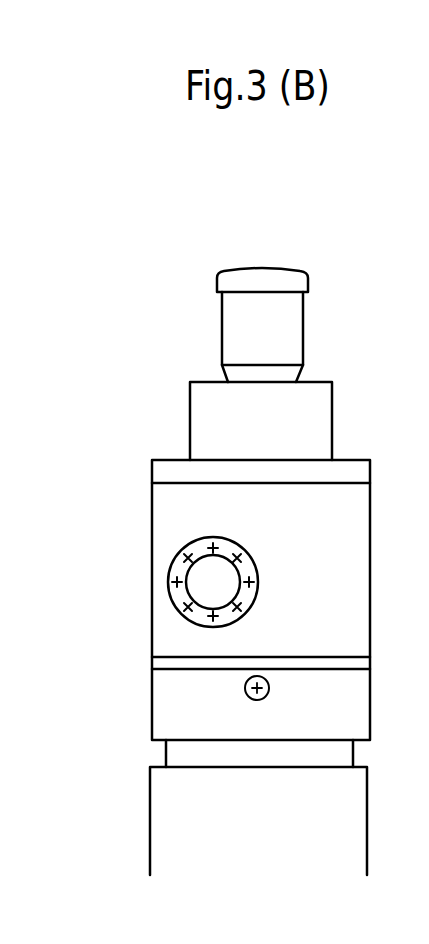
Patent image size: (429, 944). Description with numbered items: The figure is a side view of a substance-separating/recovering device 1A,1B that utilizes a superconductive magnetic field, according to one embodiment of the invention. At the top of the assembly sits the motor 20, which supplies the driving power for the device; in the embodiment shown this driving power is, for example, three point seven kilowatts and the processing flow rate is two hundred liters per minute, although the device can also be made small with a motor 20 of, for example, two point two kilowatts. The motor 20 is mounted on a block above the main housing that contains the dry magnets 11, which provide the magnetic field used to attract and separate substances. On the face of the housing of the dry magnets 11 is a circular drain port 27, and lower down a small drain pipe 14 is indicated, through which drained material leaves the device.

The motor 20 is at (278, 267).
The substance separating/recovery device 1A,1B is at (207, 381).
The dry magnets 11 is at (355, 460).
The drain port 27 is at (176, 591).
The drain pipe 14 is at (270, 693).